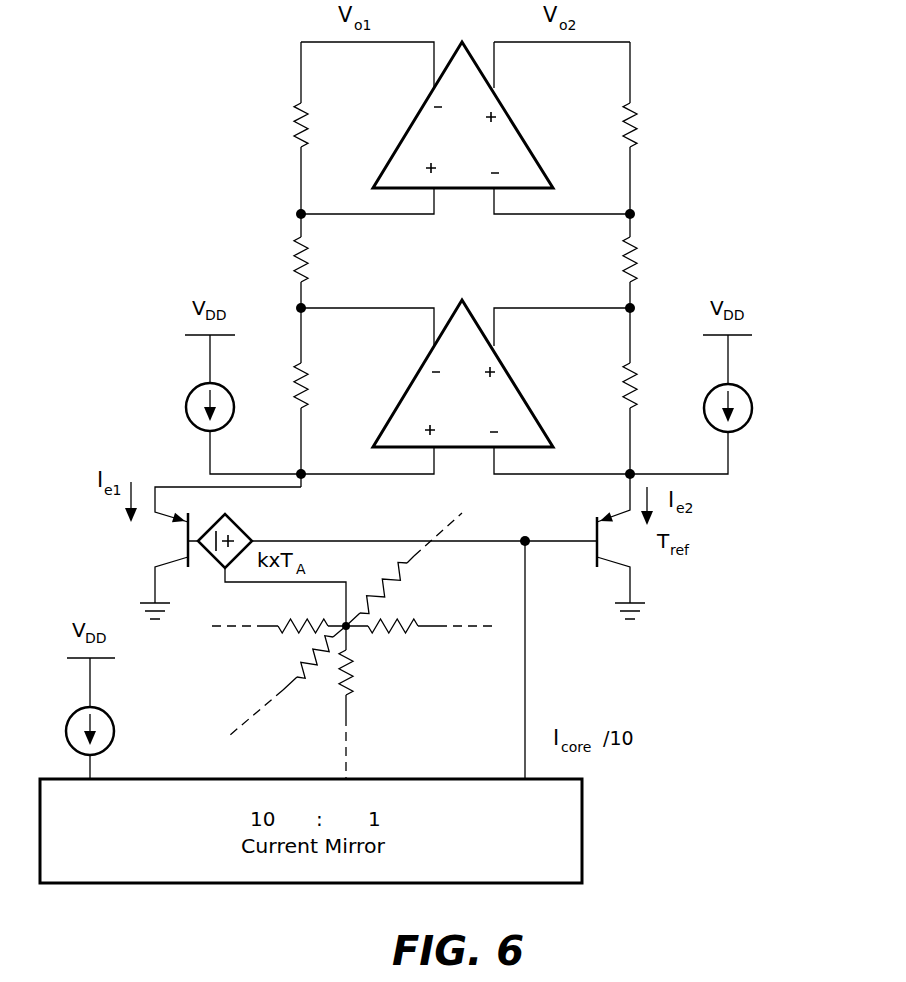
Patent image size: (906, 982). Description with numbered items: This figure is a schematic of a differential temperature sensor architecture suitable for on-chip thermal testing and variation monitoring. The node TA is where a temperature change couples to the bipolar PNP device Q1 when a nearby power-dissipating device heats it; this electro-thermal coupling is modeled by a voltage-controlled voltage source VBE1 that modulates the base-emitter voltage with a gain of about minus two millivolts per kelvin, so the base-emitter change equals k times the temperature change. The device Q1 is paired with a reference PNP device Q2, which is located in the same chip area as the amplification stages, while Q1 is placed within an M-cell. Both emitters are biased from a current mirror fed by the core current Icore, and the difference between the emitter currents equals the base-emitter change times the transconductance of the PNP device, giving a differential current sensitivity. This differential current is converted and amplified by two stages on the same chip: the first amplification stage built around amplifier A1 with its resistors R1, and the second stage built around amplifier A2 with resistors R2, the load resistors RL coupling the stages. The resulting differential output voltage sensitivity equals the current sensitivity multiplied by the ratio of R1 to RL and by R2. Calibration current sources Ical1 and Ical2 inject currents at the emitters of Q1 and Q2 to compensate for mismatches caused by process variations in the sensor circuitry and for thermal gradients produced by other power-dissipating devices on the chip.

The resistor R2 is at (465, 125).
The load resistor RL is at (464, 259).
The resistor R1 is at (466, 385).
The amplifier A2 is at (463, 115).
The amplifier A1 is at (463, 373).
The calibration current source Ical1 is at (195, 404).
The calibration current source Ical2 is at (734, 404).
The core current Icore is at (66, 718).
The bipolar device Q1 is at (209, 553).
The reference bipolar device Q2 is at (604, 546).
The base-emitter voltage source VBE1 is at (361, 636).
The node TA is at (354, 646).